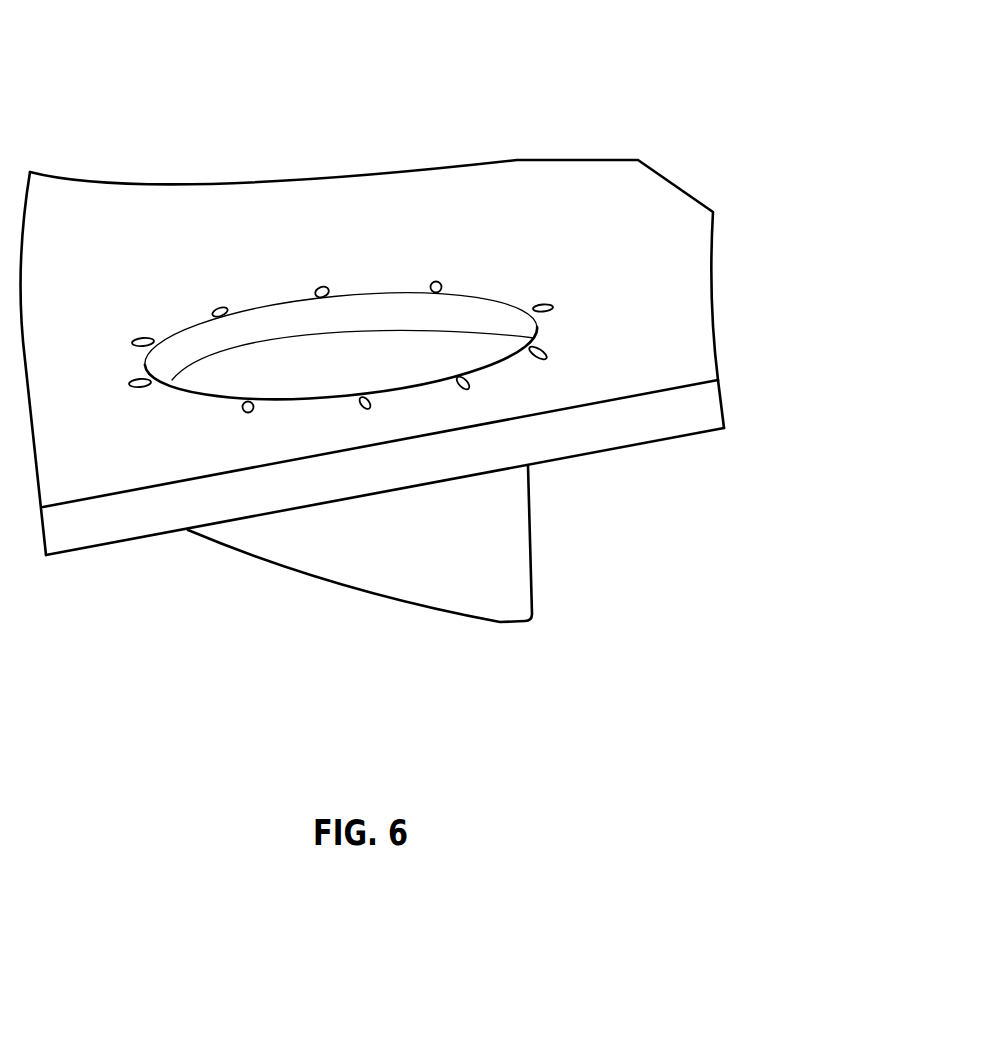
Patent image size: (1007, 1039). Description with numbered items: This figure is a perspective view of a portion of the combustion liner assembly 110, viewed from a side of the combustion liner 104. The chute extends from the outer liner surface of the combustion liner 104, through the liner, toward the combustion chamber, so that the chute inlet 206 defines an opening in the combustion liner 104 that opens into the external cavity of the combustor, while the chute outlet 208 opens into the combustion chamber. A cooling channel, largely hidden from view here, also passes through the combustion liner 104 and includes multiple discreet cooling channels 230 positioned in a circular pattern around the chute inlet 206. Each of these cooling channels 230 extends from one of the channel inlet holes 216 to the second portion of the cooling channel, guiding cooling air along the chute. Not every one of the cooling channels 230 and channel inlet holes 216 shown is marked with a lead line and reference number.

The combustion liner assembly 110 is at (630, 96).
The combustion liner 104 is at (105, 535).
The chute inlet 206 is at (203, 348).
The chute outlet 208 is at (293, 572).
The channel inlet holes 216 is at (437, 281).
The cooling channels 230 is at (553, 305).